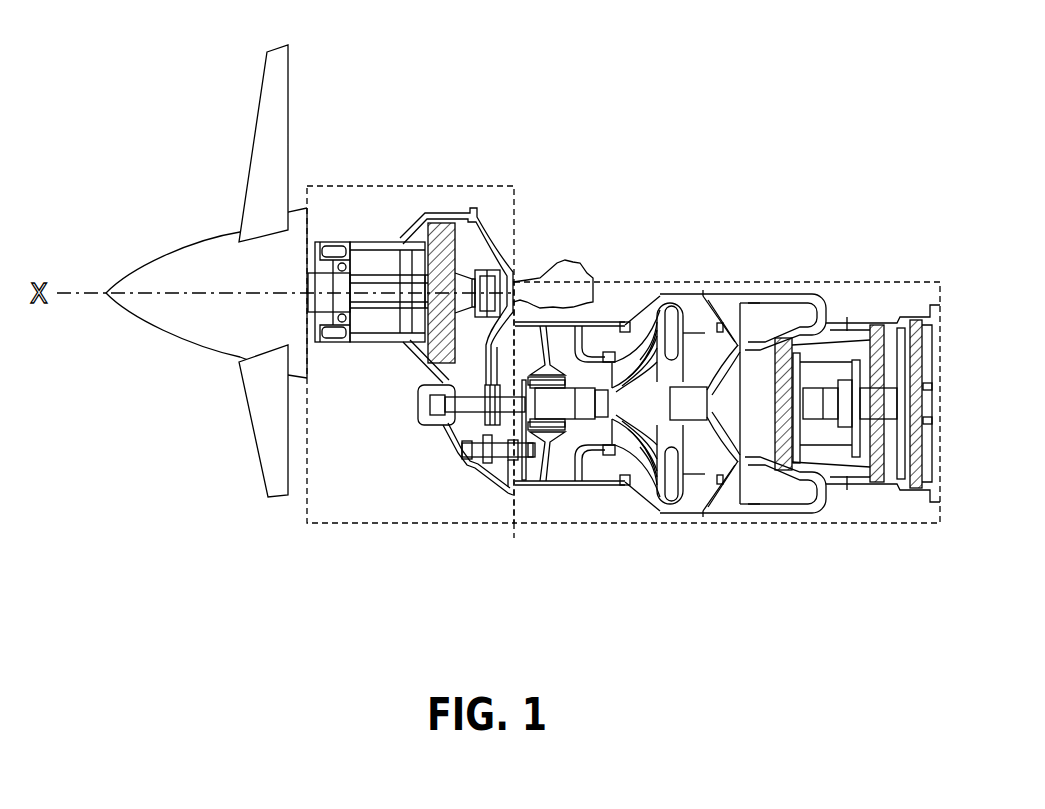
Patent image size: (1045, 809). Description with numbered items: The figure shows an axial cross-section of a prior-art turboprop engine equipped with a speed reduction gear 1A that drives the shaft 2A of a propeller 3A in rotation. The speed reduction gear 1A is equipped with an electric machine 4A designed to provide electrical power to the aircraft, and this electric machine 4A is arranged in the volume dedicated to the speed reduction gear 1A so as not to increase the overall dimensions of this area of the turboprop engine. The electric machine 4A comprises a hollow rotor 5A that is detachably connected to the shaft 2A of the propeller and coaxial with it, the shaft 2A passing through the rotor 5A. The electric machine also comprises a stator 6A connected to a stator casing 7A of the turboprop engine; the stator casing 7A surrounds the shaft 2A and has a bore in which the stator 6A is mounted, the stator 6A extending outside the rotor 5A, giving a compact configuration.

The speed reduction gear 1A is at (514, 536).
The shaft 2A is at (365, 242).
The propeller 3A is at (183, 242).
The electric machine 4A is at (372, 336).
The hollow rotor 5A is at (405, 240).
The stator 6A is at (358, 242).
The stator casing 7A is at (457, 210).